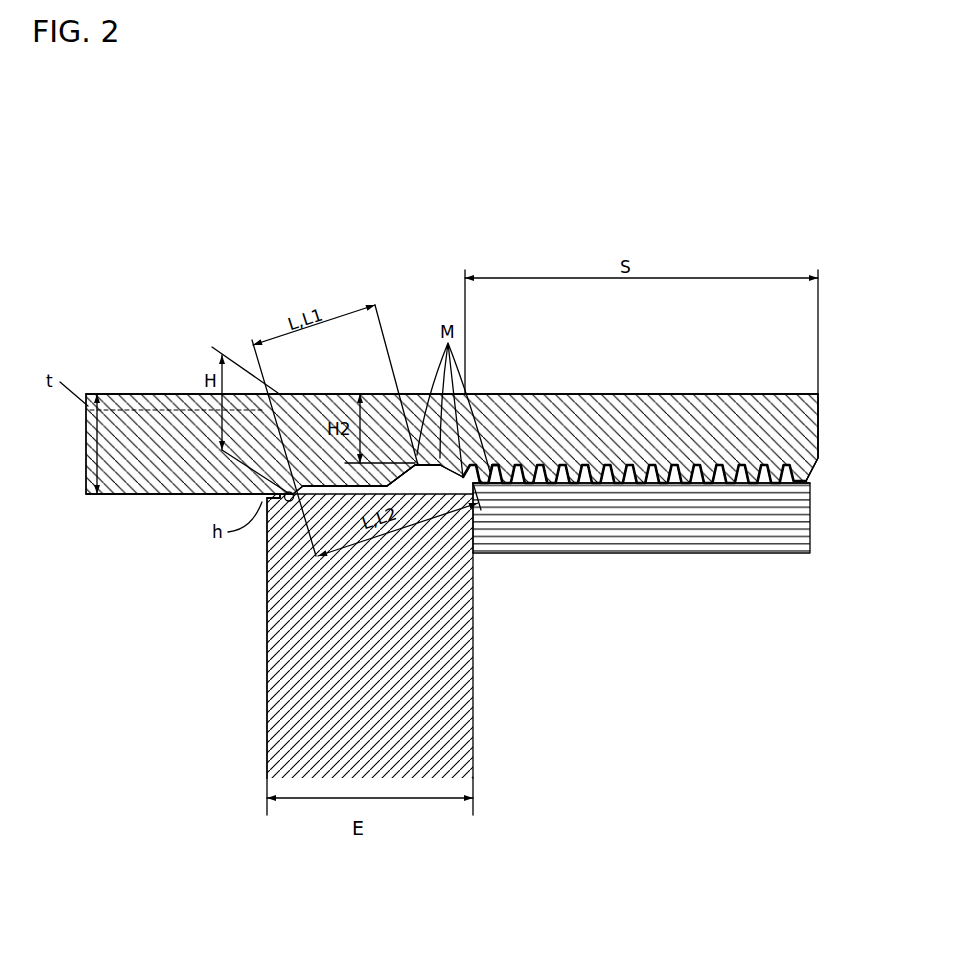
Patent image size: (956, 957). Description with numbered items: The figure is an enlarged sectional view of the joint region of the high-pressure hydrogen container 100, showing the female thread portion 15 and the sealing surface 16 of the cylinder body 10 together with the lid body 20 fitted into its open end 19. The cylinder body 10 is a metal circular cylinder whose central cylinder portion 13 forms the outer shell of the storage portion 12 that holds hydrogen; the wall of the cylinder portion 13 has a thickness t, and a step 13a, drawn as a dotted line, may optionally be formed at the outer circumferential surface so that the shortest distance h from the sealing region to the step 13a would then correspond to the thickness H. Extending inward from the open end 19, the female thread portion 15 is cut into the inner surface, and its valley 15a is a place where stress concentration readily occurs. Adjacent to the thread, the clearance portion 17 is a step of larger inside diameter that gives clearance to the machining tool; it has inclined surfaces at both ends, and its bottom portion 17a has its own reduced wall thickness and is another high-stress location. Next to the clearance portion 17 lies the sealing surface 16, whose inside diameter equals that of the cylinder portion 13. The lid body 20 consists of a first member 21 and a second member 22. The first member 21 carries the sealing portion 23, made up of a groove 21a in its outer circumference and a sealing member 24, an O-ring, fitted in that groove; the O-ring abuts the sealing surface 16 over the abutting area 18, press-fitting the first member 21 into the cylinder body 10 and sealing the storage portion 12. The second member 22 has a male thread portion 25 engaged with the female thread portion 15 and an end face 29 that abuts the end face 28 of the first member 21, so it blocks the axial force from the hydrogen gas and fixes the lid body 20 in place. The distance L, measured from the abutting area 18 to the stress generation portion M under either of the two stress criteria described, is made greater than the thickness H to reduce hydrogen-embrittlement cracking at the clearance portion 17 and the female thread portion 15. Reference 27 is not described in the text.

The high-pressure hydrogen container 100 is at (343, 292).
The cylinder body 10 is at (102, 393).
The storage portion 12 is at (157, 535).
The cylinder portion 13 is at (140, 447).
The step 13a is at (192, 405).
The female thread portion 15 is at (617, 475).
The valley 15a is at (500, 465).
The sealing surface 16 is at (300, 425).
The abutting area 18 is at (300, 425).
The clearance portion 17 is at (474, 505).
The bottom portion 17a is at (487, 496).
The open end 19 is at (818, 418).
The lid body 20 is at (545, 665).
The first member 21 is at (423, 580).
The groove 21a is at (268, 505).
The second member 22 is at (612, 530).
The sealing portion 23 is at (195, 637).
The sealing member 24 is at (284, 500).
The male thread portion 25 is at (652, 480).
The side surface 27 is at (268, 680).
The end face 28 is at (478, 535).
The end face 29 is at (472, 540).